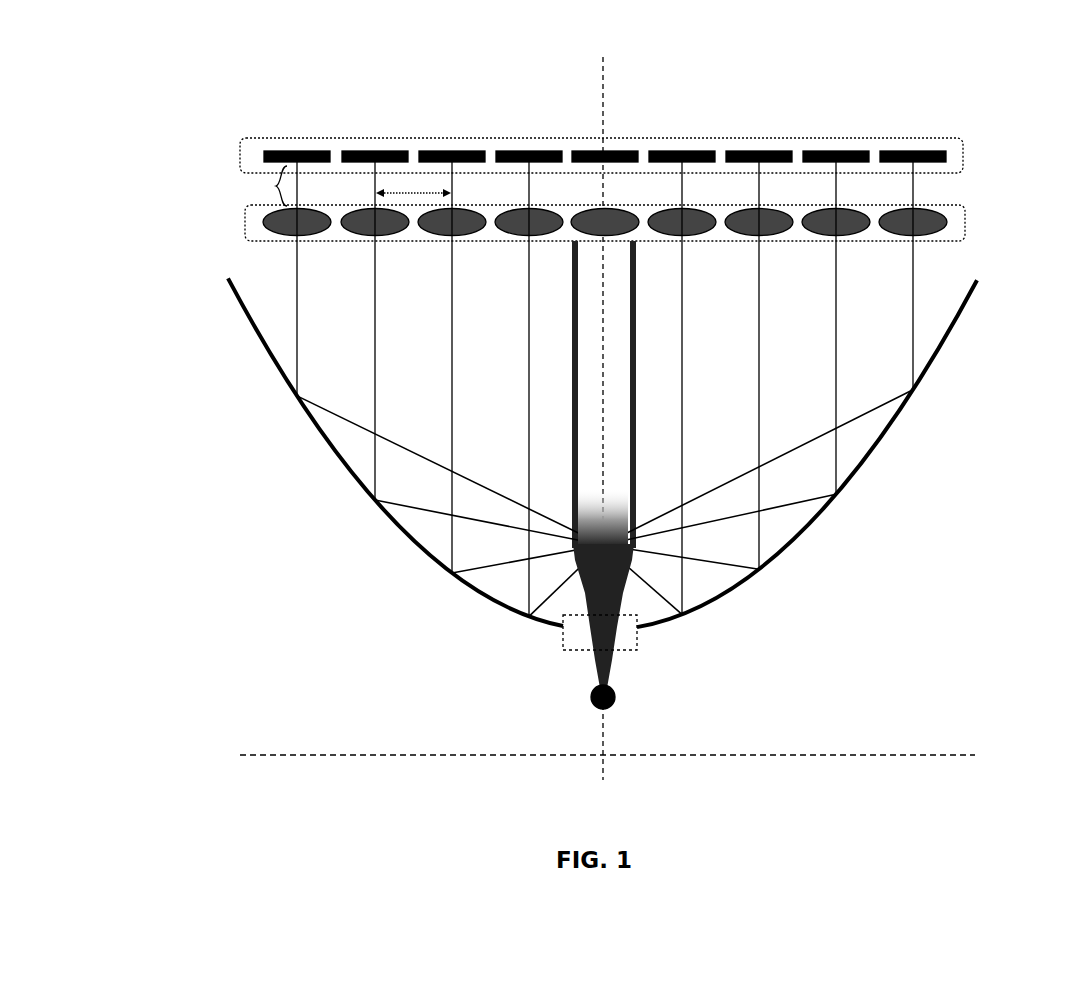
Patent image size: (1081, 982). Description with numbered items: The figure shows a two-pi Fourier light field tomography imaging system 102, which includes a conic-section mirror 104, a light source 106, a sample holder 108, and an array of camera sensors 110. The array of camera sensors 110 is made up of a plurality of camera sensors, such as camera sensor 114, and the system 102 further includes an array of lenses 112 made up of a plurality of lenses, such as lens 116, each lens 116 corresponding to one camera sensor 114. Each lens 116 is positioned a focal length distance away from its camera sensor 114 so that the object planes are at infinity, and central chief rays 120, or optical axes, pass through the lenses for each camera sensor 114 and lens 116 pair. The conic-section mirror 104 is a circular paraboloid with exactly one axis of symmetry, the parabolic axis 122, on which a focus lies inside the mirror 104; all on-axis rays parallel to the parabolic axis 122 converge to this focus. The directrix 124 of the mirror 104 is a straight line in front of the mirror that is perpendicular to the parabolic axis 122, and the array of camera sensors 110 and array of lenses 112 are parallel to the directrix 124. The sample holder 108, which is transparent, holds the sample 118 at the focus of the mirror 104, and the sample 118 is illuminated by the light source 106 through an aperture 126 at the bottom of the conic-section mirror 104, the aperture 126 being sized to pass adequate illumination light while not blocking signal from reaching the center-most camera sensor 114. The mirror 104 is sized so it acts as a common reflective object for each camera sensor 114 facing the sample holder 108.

The 2π-FLIFT imaging system 102 is at (204, 72).
The conic-section mirror 104 is at (312, 428).
The light source 106 is at (590, 690).
The sample holder 108 is at (636, 478).
The array of camera sensors 110 is at (738, 138).
The array of lenses 112 is at (966, 245).
The camera sensor 114 is at (962, 141).
The lens 116 is at (948, 222).
The sample 118 is at (635, 553).
The central chief rays 120 is at (682, 415).
The parabolic axis 122 is at (603, 767).
The directrix 124 is at (318, 754).
The aperture 126 is at (637, 648).